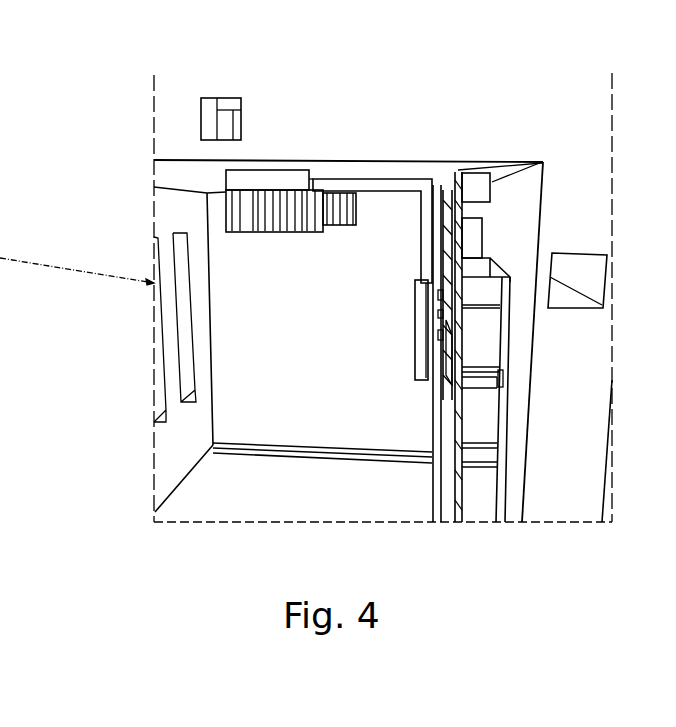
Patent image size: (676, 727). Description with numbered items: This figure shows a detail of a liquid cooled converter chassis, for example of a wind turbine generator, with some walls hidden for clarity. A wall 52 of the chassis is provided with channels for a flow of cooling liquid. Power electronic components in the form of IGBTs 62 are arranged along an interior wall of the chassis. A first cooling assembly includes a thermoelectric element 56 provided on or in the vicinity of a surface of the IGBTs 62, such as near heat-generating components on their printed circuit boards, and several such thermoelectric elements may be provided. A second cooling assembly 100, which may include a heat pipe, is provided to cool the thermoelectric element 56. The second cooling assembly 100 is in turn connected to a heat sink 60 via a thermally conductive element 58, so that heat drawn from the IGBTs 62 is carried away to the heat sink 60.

The wall 52 is at (222, 120).
The thermoelectric element 56 is at (433, 333).
The thermally conductive element 58 is at (402, 185).
The heat sink 60 is at (263, 228).
The IGBTs 62 is at (480, 425).
The second cooling assembly 100 is at (424, 308).